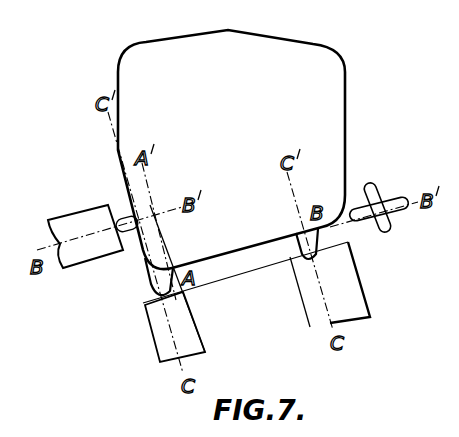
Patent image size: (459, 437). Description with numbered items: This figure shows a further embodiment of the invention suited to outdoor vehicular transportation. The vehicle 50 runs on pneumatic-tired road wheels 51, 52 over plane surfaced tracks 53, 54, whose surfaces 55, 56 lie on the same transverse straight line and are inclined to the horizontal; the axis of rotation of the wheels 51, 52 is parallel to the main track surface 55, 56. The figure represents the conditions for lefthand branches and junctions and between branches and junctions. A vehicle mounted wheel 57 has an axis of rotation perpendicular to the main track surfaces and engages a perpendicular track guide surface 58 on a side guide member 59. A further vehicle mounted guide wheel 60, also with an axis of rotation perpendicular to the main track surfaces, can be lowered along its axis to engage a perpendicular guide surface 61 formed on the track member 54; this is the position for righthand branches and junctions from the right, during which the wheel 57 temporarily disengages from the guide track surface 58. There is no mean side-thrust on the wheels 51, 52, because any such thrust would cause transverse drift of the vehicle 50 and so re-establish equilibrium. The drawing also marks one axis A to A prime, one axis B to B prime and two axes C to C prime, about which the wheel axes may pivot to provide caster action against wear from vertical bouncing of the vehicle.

The vehicle 50 is at (225, 162).
The pneumatic-tired road wheel 51 is at (152, 277).
The pneumatic-tired road wheel 52 is at (297, 243).
The plane surfaced track 53 is at (185, 323).
The plane surfaced track 54 is at (354, 300).
The track surface 55 is at (159, 327).
The track surface 56 is at (342, 242).
The vehicle mounted wheel 57 is at (115, 215).
The track guide surface 58 is at (121, 242).
The side guide member 59 is at (80, 222).
The guide wheel 60 is at (398, 197).
The guide surface 61 is at (370, 306).